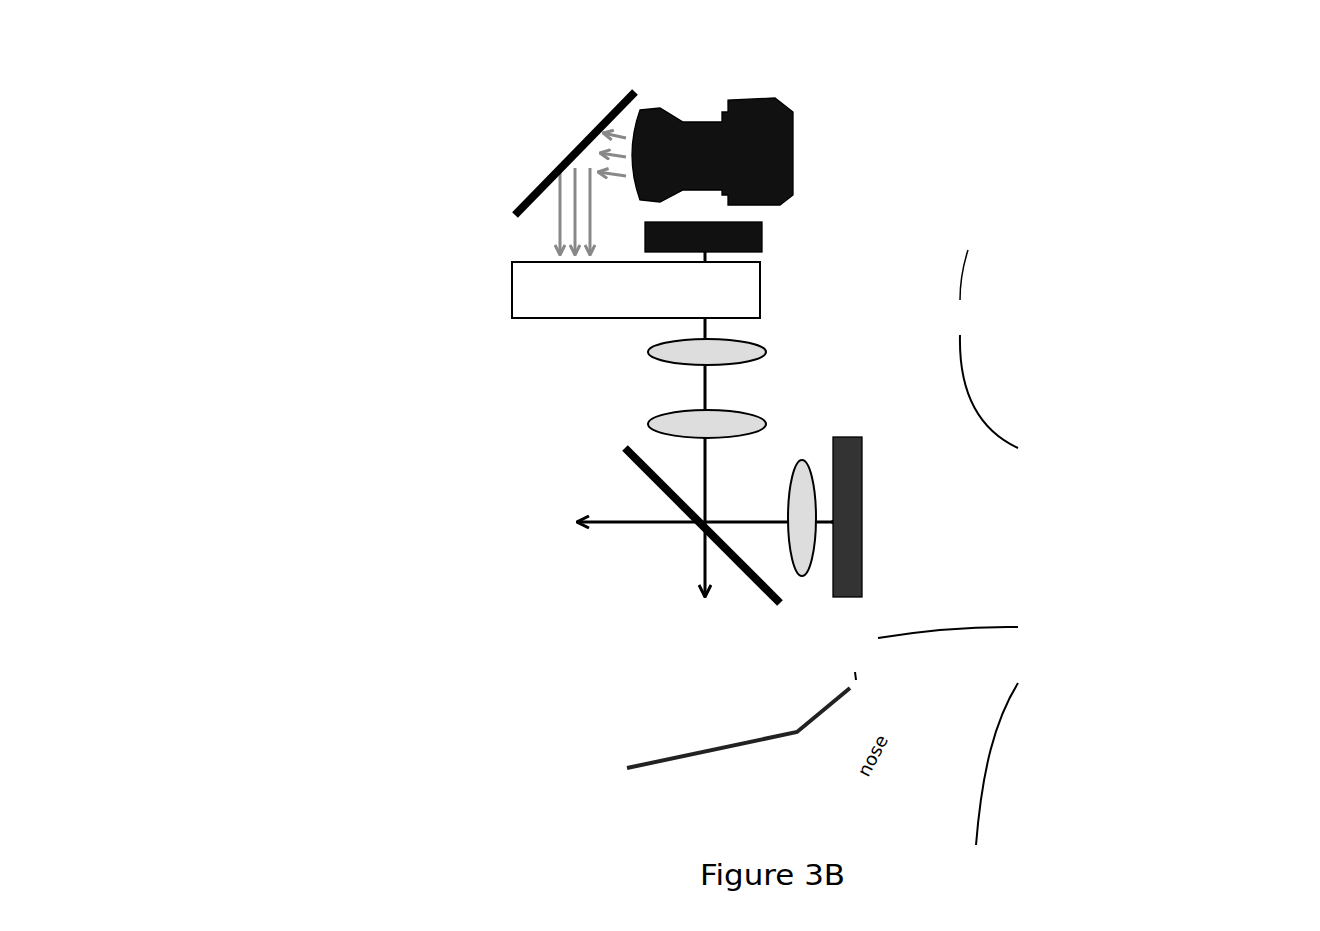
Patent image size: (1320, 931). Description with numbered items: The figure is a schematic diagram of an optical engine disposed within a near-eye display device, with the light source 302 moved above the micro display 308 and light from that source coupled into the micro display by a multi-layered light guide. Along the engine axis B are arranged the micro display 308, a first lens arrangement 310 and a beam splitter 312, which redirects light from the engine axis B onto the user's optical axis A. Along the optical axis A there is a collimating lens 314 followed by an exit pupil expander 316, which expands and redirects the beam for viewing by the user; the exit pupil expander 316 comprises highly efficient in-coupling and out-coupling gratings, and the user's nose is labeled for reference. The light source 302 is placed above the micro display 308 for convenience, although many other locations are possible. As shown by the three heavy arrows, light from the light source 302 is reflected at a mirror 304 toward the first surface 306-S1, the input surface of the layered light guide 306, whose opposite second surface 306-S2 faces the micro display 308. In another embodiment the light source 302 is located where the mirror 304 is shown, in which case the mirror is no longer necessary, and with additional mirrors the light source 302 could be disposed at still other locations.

The light source 302 is at (795, 111).
The mirror 304 is at (592, 113).
The layered light guide 306 is at (511, 293).
The first surface 306-S1 is at (533, 261).
The second surface 306-S2 is at (531, 319).
The micro display 308 is at (767, 233).
The first lens arrangement 310 is at (643, 345).
The beam splitter 312 is at (626, 457).
The collimating lens 314 is at (801, 458).
The exit pupil expander 316 is at (864, 542).
The optical axis A is at (614, 527).
The engine axis B is at (703, 570).